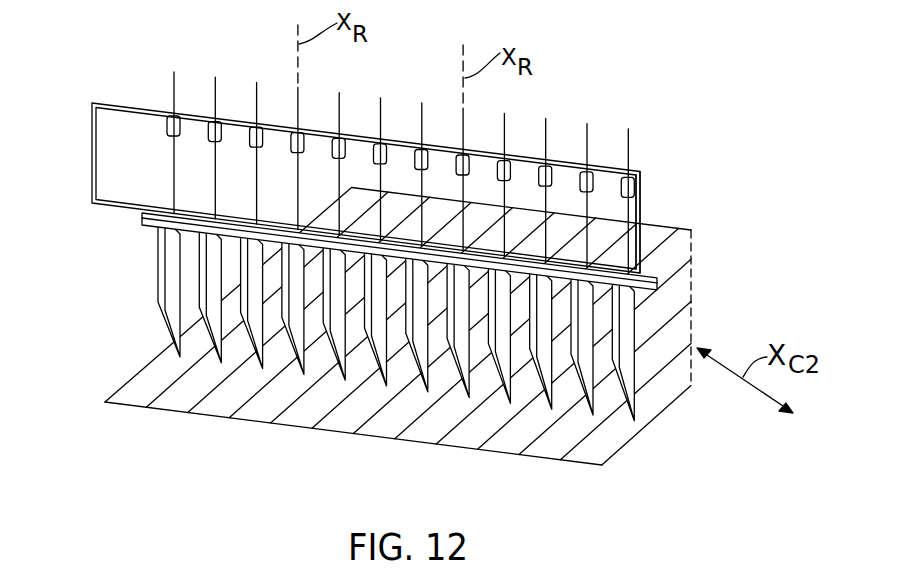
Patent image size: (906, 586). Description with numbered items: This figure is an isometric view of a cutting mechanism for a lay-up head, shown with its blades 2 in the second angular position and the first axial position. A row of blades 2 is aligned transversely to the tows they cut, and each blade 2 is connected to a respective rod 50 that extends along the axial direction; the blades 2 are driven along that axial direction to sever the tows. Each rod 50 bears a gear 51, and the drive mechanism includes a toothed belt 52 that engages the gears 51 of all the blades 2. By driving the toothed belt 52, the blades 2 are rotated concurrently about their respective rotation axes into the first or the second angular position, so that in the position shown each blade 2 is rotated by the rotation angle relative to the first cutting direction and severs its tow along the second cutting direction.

The blade 2 is at (261, 332).
The rod 50 is at (177, 95).
The gear 51 is at (641, 183).
The toothed belt 52 is at (127, 127).